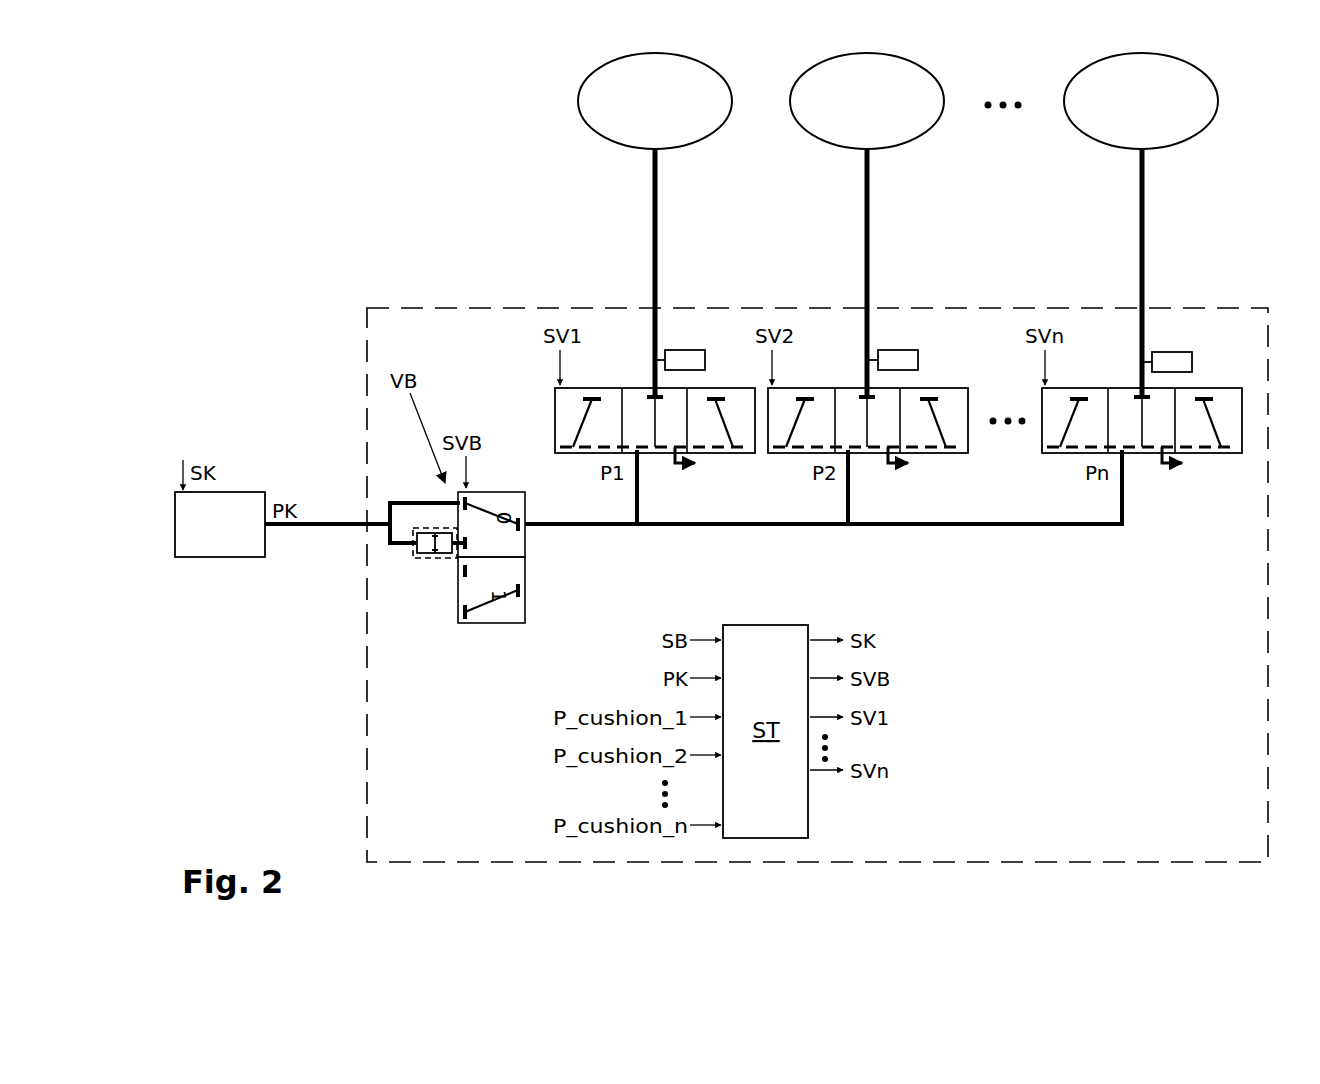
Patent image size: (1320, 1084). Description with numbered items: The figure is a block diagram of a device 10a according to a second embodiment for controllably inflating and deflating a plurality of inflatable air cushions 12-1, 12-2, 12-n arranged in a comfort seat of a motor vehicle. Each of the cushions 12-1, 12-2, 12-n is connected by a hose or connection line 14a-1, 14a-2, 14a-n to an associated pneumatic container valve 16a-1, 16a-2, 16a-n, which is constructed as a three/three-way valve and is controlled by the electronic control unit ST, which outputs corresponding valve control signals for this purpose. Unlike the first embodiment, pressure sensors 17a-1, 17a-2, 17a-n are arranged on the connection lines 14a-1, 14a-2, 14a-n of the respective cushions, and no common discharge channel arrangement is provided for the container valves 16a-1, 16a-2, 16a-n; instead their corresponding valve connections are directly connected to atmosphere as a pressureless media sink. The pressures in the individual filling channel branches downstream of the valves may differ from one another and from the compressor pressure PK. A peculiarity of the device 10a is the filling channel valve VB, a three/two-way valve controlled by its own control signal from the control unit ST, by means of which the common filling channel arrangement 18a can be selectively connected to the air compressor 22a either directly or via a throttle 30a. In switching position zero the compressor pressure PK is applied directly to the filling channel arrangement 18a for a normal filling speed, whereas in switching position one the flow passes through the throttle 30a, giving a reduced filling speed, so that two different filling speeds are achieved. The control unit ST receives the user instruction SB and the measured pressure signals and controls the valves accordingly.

The device 10a is at (358, 292).
The air cushion 12-1 is at (693, 145).
The air cushion 12-2 is at (905, 145).
The air cushion 12-n is at (1180, 145).
The connection line 14a-1 is at (658, 223).
The connection line 14a-2 is at (870, 223).
The connection line 14a-n is at (1145, 223).
The container valve 16a-1 is at (608, 366).
The container valve 16a-2 is at (820, 365).
The container valve 16a-n is at (1098, 365).
The pressure sensor 17a-1 is at (684, 358).
The pressure sensor 17a-2 is at (900, 358).
The pressure sensor 17a-n is at (1172, 360).
The filling channel arrangement 18a is at (730, 531).
The air compressor 22a is at (222, 558).
The throttle 30a is at (436, 560).